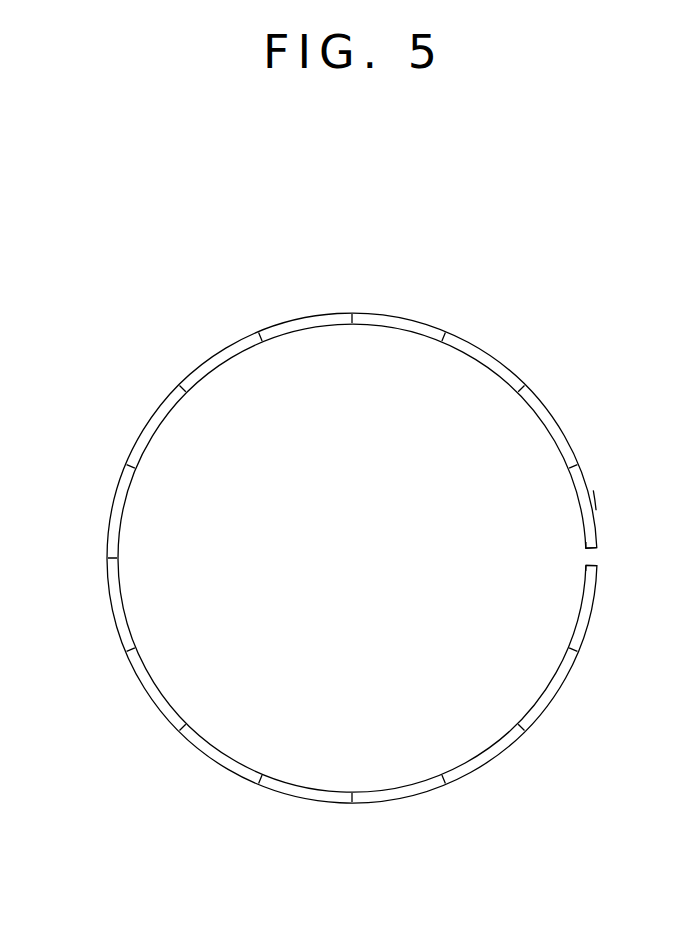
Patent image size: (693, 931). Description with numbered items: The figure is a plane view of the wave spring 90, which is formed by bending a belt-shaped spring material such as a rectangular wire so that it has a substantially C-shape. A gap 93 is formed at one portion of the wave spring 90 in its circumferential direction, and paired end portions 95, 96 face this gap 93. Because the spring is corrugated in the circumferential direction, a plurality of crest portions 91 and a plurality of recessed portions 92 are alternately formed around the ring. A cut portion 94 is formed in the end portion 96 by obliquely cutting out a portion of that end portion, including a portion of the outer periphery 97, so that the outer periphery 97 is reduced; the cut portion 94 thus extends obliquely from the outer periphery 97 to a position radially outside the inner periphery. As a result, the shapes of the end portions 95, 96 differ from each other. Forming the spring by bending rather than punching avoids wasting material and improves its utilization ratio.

The wave spring 90 is at (531, 306).
The crest portions 91 is at (351, 321).
The recessed portions 92 is at (261, 338).
The gap 93 is at (596, 565).
The cut portion 94 is at (598, 548).
The end portion 95 is at (586, 565).
The end portion 96 is at (586, 548).
The outer periphery 97 is at (597, 500).